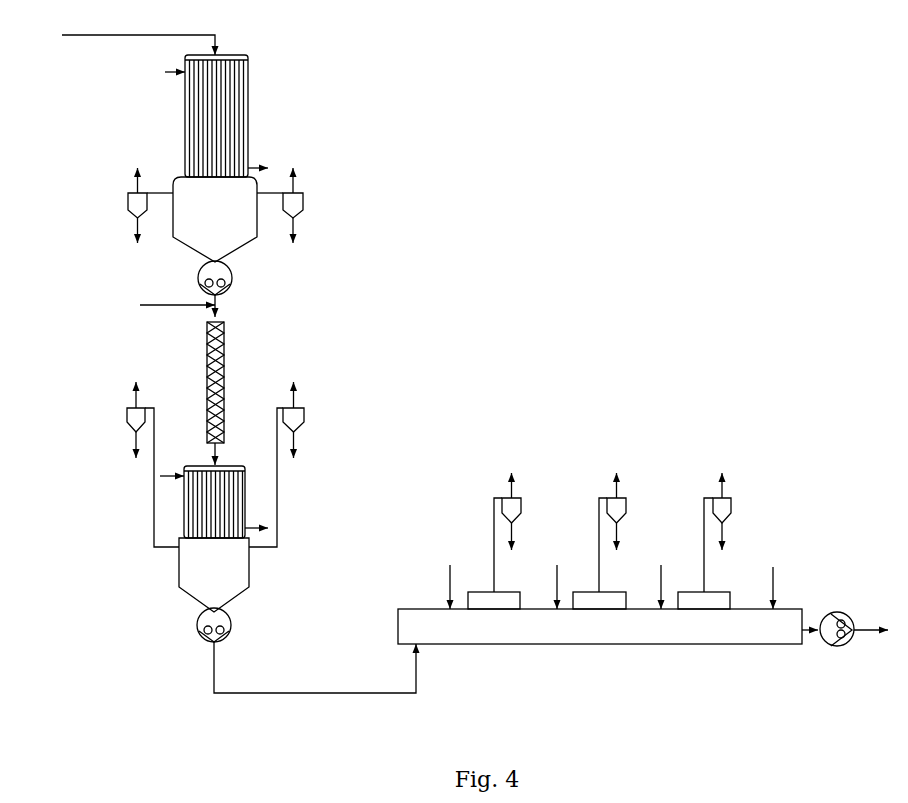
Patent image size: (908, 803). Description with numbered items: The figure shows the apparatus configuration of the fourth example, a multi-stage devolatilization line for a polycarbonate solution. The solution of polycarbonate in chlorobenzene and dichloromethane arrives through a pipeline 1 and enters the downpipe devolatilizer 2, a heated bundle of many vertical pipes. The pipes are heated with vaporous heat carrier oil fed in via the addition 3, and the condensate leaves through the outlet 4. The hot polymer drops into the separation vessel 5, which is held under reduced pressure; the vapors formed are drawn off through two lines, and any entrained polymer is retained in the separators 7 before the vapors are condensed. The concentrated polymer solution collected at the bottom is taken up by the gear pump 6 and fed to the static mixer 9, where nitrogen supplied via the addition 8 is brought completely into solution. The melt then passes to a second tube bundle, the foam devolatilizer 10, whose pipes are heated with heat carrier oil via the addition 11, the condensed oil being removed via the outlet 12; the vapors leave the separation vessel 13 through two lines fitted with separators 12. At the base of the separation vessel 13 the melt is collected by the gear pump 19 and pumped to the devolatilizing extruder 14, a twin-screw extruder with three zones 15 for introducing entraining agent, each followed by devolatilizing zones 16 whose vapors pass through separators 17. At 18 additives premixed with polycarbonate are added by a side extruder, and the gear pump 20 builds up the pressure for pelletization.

The pipeline 1 is at (138, 49).
The downpipe devolatilizer 2 is at (225, 116).
The addition 3 is at (174, 89).
The outlet 4 is at (259, 153).
The separation vessel 5 is at (215, 219).
The gear pump 6 is at (229, 289).
The separators 7 is at (214, 205).
The addition 8 is at (159, 303).
The static mixer 9 is at (197, 393).
The second heat exchanger 10 is at (227, 500).
The addition 11 is at (169, 462).
The separators 12 is at (203, 464).
The separation vessel 13 is at (214, 575).
The devolatilizing extruder 14 is at (588, 626).
The zones for introducing entraining agent 15 is at (550, 602).
The devolatilizing zones 16 is at (599, 616).
The separators 17 is at (631, 532).
The additive addition point 18 is at (782, 581).
The gear pump 19 is at (306, 650).
The gear pump 20 is at (854, 649).